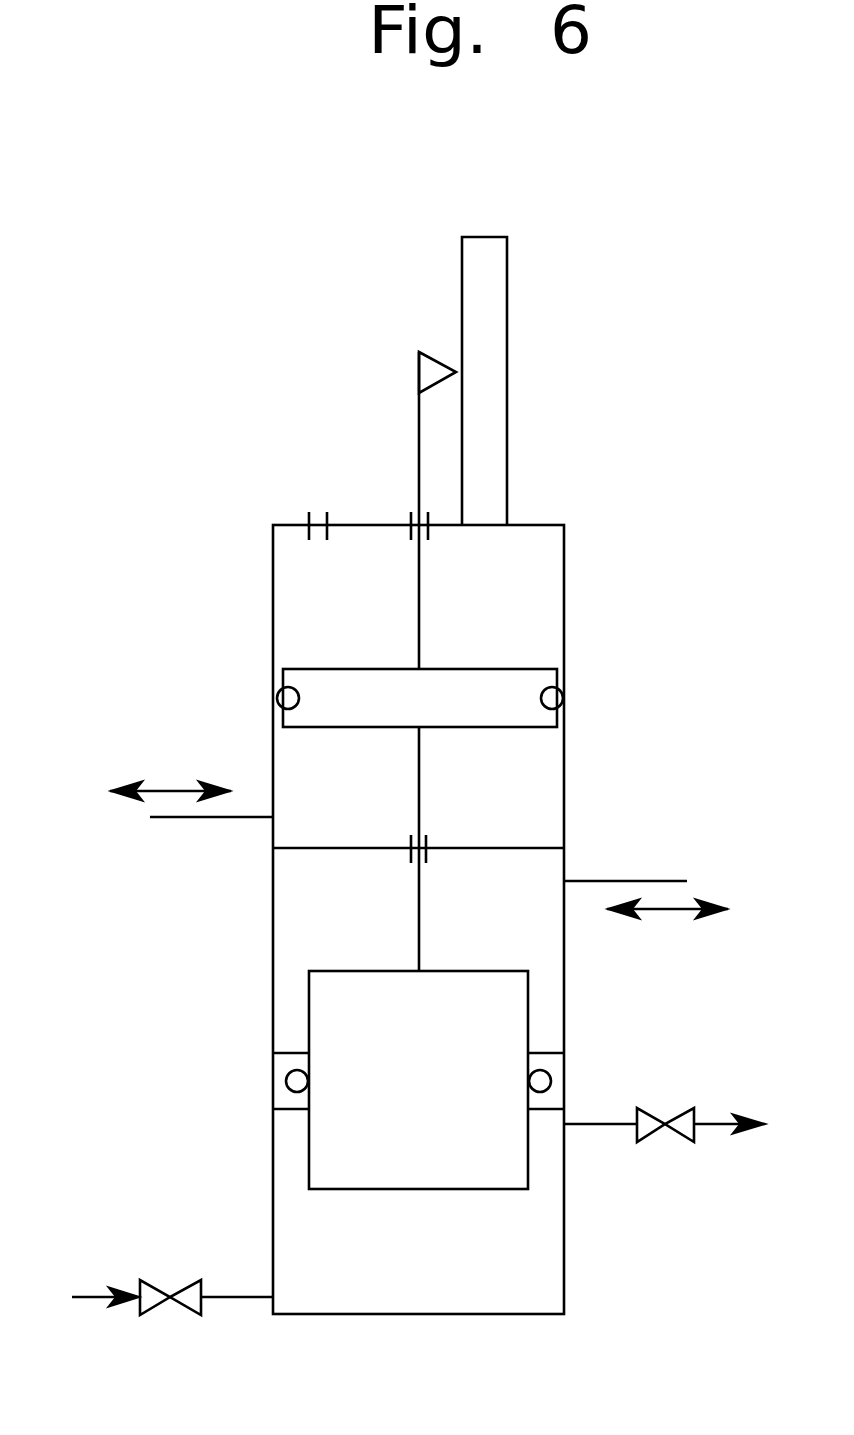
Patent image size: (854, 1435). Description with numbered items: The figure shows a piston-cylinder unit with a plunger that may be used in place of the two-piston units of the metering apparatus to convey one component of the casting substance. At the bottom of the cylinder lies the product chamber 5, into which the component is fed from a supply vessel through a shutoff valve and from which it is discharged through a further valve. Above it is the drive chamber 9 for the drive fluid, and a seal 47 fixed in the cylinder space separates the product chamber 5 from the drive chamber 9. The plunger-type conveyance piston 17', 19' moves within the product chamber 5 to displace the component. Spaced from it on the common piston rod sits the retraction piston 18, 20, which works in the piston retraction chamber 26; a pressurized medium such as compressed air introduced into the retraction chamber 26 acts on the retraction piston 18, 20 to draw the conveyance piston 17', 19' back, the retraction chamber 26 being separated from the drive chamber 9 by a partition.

The product chamber 5 is at (430, 1281).
The drive chamber 9 is at (500, 926).
The conveyance piston 17' is at (418, 1080).
The conveyance piston 19' is at (418, 1080).
The retraction piston 18 is at (420, 698).
The retraction piston 20 is at (467, 717).
The piston retraction chamber 26 is at (365, 800).
The seal 47 is at (552, 1081).